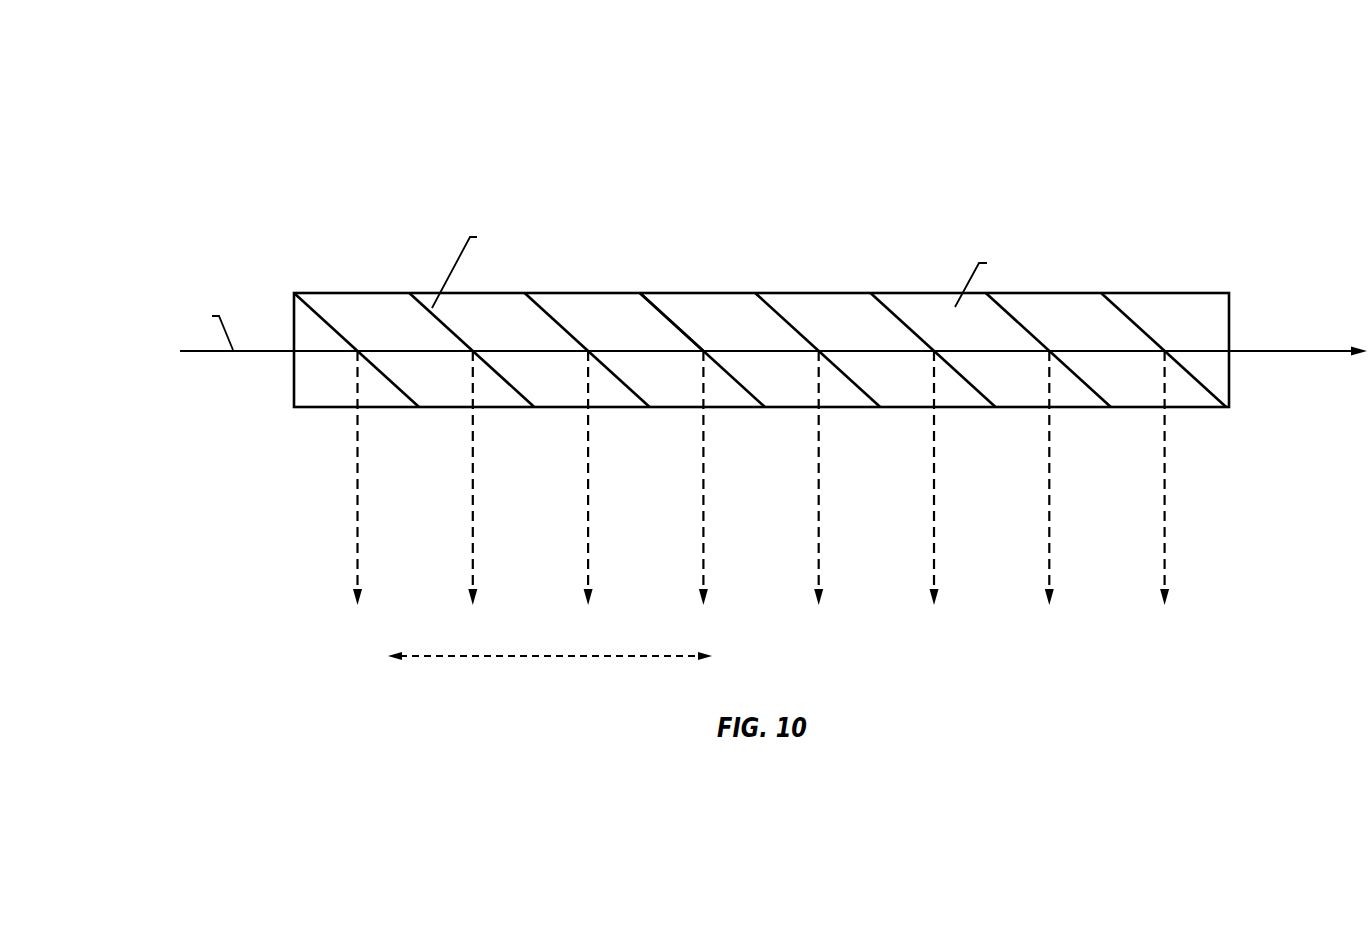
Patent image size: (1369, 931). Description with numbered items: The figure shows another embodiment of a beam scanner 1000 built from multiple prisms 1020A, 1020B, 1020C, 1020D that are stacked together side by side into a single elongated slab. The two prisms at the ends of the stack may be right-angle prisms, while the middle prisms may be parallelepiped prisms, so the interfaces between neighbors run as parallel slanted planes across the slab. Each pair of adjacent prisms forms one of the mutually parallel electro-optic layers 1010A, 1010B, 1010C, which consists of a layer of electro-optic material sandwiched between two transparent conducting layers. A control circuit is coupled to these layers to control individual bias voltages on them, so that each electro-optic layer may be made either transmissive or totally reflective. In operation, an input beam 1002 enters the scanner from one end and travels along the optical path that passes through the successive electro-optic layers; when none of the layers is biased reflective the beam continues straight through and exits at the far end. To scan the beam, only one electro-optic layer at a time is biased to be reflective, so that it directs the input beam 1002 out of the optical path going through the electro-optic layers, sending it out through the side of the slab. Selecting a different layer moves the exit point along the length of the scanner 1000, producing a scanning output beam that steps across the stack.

The beam scanner 1000 is at (205, 99).
The input beam 1002 is at (773, 368).
The electro-optic layer 1010A is at (412, 398).
The electro-optic layer 1010B is at (526, 398).
The electro-optic layer 1010C is at (641, 398).
The prism 1020A is at (297, 368).
The prism 1020B is at (414, 305).
The prism 1020C is at (523, 305).
The prism 1020D is at (636, 305).